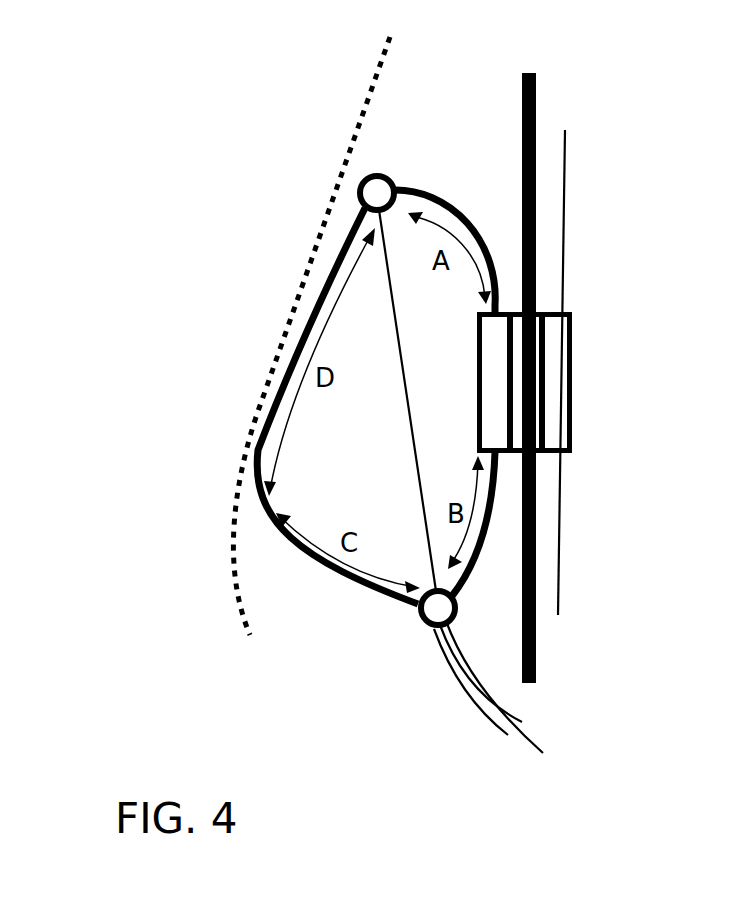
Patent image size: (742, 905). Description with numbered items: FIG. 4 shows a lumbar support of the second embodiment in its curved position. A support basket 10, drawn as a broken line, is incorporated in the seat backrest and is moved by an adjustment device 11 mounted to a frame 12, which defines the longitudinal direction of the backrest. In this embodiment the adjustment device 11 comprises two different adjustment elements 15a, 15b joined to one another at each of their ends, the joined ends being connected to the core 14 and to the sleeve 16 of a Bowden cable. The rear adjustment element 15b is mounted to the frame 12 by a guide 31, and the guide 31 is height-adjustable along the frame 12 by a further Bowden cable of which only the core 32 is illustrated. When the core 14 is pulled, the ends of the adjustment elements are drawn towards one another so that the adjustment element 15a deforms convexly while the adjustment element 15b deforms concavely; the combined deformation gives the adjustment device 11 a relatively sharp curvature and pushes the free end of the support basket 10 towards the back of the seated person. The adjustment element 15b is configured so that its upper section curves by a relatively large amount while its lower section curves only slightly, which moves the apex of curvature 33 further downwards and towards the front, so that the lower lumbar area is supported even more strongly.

The support basket 10 is at (347, 162).
The adjustment device 11 is at (632, 189).
The frame 12 is at (533, 107).
The core 14 is at (408, 420).
The adjustment element 15a is at (327, 285).
The rear adjustment element 15b is at (433, 202).
The sleeve 16 is at (457, 667).
The guide 31 is at (557, 343).
The core 32 is at (557, 555).
The apex of curvature 33 is at (247, 452).